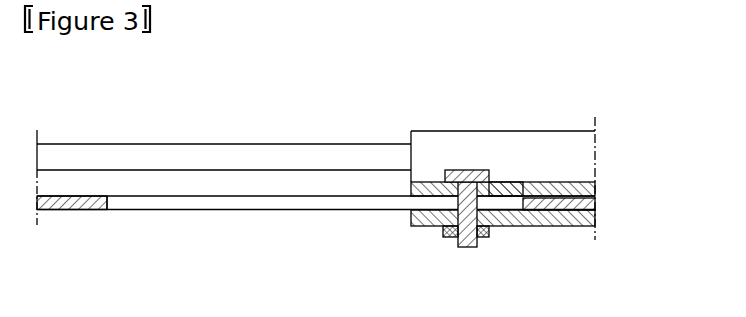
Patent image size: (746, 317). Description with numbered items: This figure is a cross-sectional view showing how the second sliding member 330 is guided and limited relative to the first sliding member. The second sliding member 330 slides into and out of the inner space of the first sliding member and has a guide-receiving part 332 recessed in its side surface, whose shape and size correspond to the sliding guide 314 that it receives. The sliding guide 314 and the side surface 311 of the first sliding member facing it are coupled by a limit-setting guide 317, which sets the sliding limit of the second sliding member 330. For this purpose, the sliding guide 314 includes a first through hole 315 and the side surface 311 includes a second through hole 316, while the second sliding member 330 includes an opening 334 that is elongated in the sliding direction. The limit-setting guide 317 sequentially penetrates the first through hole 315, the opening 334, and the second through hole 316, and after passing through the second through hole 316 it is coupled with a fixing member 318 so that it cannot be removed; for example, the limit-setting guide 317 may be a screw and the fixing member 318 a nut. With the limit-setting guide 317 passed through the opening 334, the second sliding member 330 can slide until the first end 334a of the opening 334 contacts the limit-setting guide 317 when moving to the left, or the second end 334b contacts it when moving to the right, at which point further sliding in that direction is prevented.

The side surface 311 is at (422, 227).
The sliding guide 314 is at (596, 191).
The first through hole 315 is at (500, 182).
The second through hole 316 is at (489, 233).
The limit-setting guide 317 is at (467, 170).
The fixing member 318 is at (452, 237).
The second sliding member 330 is at (99, 170).
The guide-receiving part 332 is at (74, 209).
The opening 334 is at (221, 209).
The first end 334a is at (548, 215).
The second end 334b is at (107, 203).